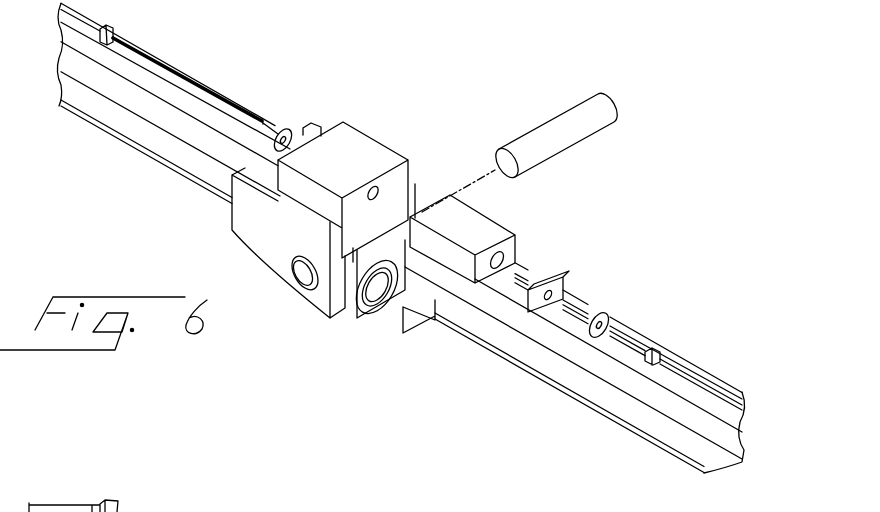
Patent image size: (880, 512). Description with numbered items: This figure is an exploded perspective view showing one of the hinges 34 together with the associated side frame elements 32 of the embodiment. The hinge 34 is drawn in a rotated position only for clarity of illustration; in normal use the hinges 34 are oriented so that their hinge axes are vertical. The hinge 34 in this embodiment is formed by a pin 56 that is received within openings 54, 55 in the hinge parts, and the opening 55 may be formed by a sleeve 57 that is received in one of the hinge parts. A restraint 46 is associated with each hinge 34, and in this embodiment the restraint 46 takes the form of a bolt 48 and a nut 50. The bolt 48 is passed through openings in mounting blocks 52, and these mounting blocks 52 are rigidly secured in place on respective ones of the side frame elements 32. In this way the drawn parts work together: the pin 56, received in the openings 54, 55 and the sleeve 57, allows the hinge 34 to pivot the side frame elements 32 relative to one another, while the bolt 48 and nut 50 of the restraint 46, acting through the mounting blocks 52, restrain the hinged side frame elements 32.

The side frame element 32 is at (181, 172).
The hinge 34 is at (336, 340).
The restraint 46 is at (242, 86).
The bolt 48 is at (175, 72).
The nut 50 is at (645, 362).
The mounting block 52 is at (497, 230).
The opening 54 is at (257, 263).
The opening 55 is at (393, 317).
The pin 56 is at (557, 116).
The sleeve 57 is at (363, 313).